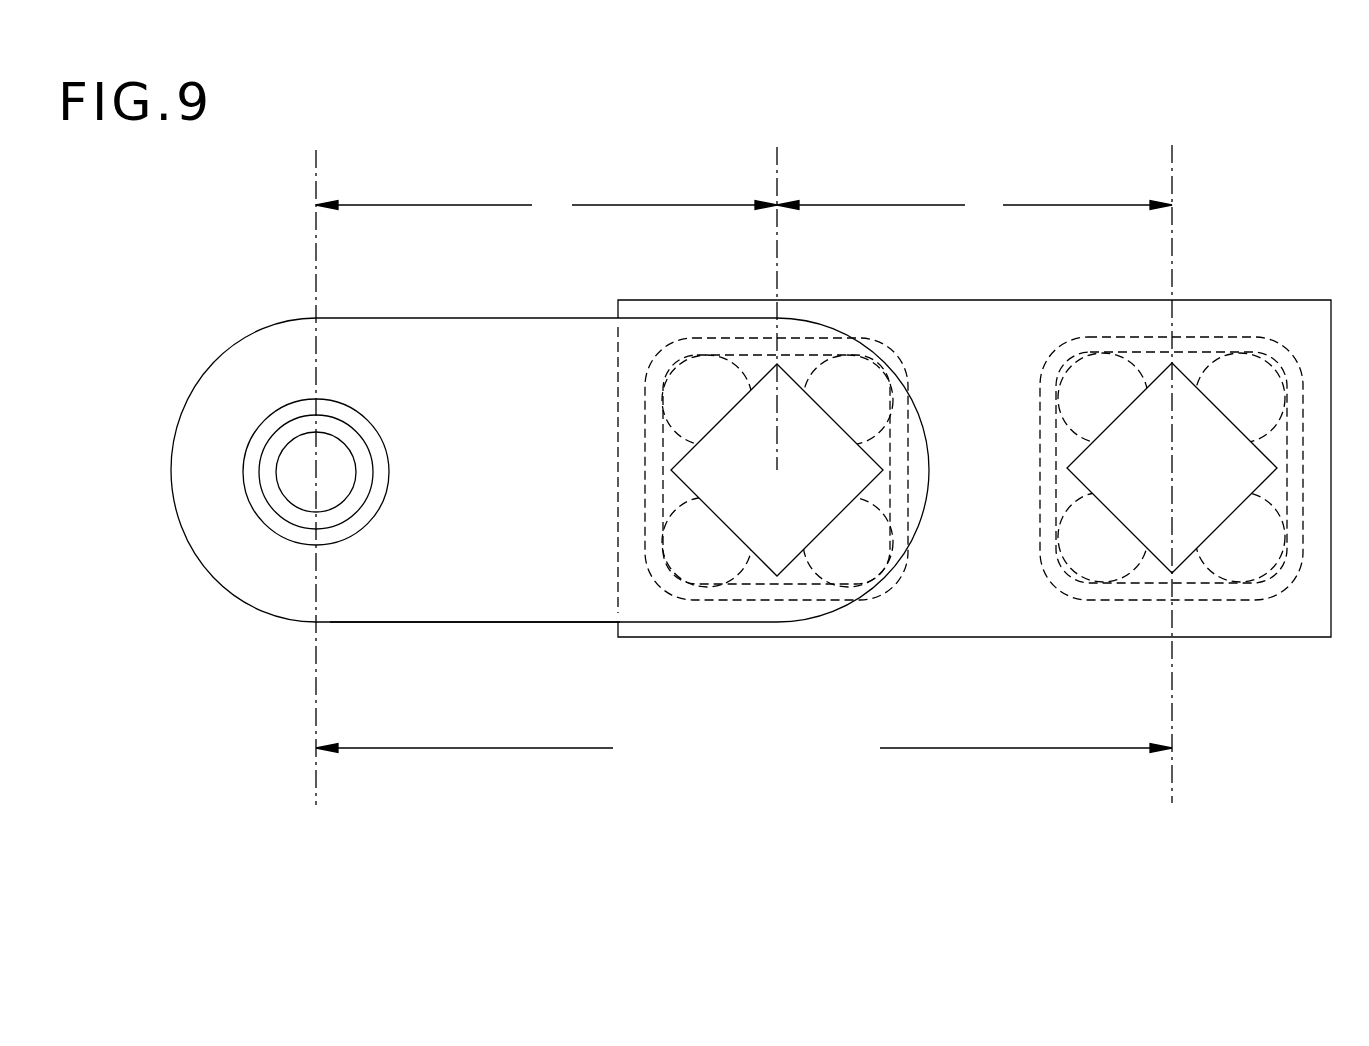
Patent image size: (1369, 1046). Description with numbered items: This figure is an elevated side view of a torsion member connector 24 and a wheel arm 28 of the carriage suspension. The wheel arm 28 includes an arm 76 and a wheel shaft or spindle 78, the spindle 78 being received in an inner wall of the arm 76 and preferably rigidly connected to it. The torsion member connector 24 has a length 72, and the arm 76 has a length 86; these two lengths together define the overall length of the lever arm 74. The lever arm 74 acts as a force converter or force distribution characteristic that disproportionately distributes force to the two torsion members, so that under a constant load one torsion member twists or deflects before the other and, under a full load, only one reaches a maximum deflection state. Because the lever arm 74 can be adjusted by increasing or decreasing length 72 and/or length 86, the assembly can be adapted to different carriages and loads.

The torsion member connector 24 is at (1258, 275).
The wheel arm 28 is at (265, 613).
The length of the torsion member connector 72 is at (993, 197).
The lever arm 74 is at (682, 765).
The arm 76 is at (508, 625).
The wheel spindle 78 is at (253, 440).
The length of the arm 86 is at (563, 197).